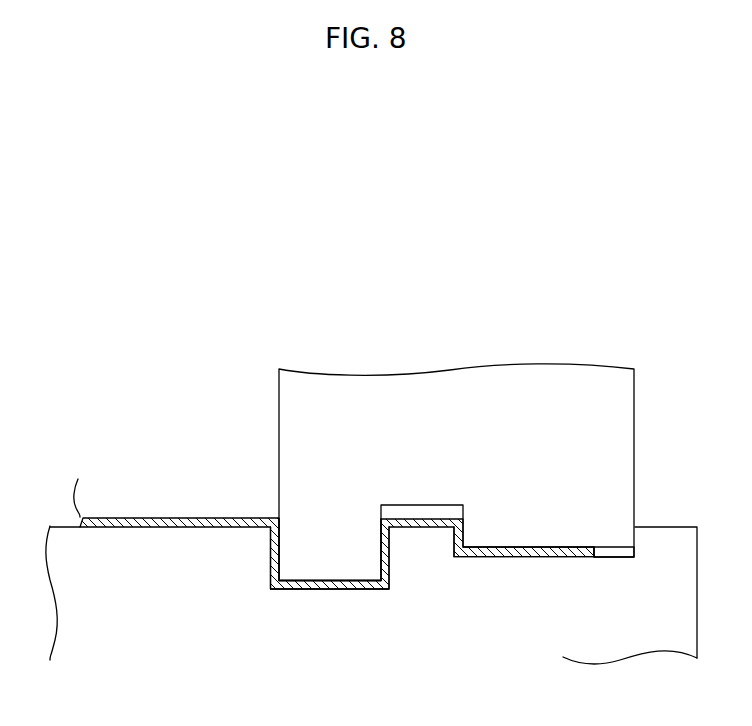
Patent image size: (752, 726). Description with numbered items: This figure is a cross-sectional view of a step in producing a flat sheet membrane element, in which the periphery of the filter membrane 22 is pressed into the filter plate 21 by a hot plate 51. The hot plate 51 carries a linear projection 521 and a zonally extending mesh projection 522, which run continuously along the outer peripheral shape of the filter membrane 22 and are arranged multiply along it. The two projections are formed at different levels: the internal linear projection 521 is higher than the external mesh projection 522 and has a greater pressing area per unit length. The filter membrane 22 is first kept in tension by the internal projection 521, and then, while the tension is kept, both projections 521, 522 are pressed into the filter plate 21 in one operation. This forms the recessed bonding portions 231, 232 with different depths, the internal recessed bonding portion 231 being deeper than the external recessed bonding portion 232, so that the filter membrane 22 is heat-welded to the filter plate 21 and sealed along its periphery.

The filter plate 21 is at (683, 527).
The filter membrane 22 is at (145, 518).
The internal recessed bonding portion 231 is at (337, 580).
The external recessed bonding portion 232 is at (497, 548).
The hot plate 51 is at (480, 383).
The linear projection 521 is at (303, 579).
The mesh projection 522 is at (605, 553).